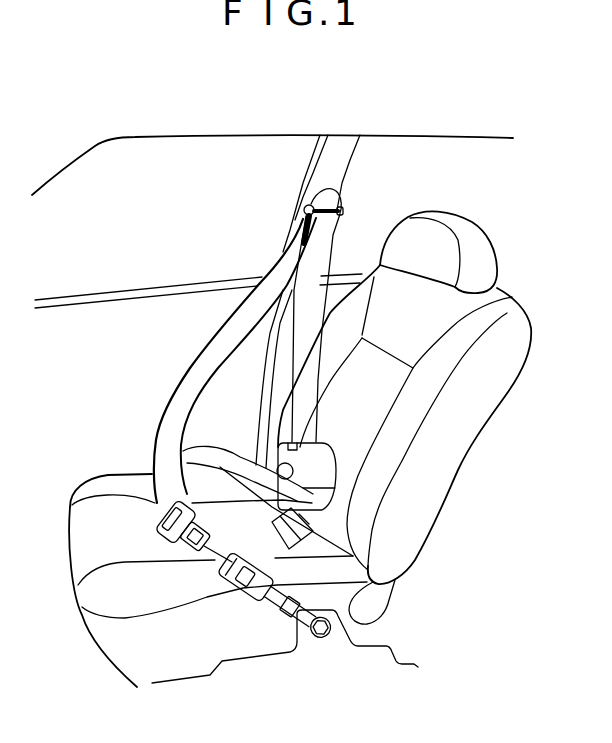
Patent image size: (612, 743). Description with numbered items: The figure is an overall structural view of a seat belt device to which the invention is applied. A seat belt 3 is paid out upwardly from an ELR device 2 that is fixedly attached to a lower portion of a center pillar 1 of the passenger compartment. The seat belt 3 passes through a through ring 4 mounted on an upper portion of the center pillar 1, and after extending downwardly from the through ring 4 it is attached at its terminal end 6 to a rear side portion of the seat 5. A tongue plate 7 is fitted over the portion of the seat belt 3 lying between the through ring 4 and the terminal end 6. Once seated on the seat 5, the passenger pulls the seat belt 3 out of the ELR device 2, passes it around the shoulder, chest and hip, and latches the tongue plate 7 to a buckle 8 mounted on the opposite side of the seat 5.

The center pillar 1 is at (263, 366).
The ELR device 2 is at (327, 468).
The seat belt 3 is at (318, 267).
The through ring 4 is at (343, 212).
The seat 5 is at (132, 477).
The terminal end 6 is at (281, 535).
The tongue plate 7 is at (170, 540).
The buckle 8 is at (250, 589).